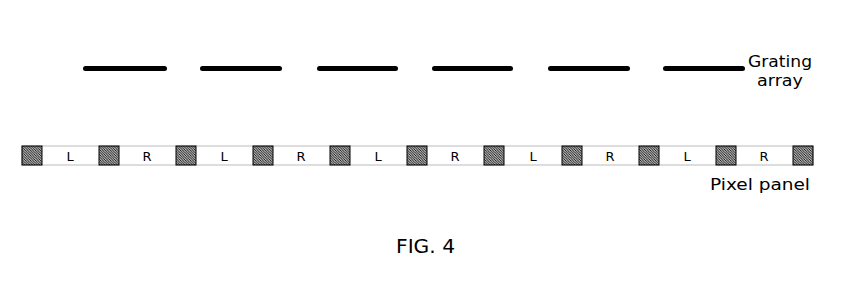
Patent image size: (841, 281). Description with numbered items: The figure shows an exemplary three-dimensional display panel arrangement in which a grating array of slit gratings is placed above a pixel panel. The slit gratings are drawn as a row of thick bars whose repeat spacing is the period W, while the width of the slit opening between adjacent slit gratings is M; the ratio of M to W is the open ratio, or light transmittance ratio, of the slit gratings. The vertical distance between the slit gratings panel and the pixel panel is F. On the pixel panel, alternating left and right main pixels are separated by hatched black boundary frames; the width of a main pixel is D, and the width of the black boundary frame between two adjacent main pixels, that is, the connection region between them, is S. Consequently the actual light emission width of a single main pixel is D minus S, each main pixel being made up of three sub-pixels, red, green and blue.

The distance between the slit gratings panel and the pixel panel F is at (67, 146).
The period for the slit gratings W is at (293, 80).
The width of the slit opening between adjacent slit gratings M is at (544, 80).
The width of the black boundary frame between two adjacent main pixels S is at (428, 135).
The width of a main pixel D is at (340, 165).